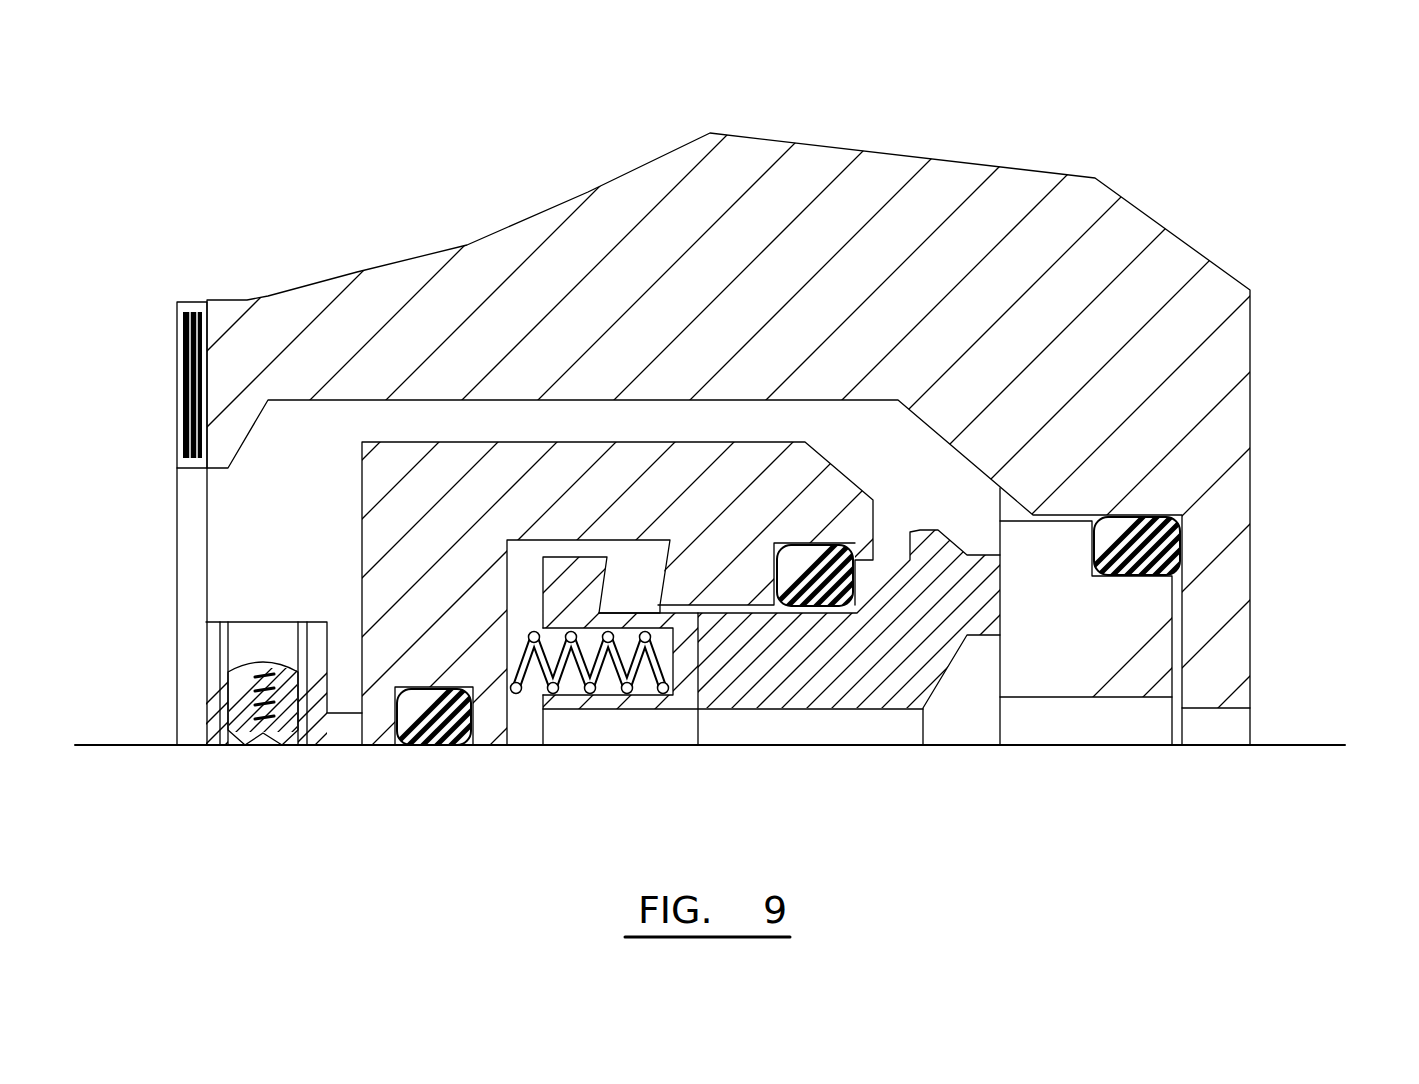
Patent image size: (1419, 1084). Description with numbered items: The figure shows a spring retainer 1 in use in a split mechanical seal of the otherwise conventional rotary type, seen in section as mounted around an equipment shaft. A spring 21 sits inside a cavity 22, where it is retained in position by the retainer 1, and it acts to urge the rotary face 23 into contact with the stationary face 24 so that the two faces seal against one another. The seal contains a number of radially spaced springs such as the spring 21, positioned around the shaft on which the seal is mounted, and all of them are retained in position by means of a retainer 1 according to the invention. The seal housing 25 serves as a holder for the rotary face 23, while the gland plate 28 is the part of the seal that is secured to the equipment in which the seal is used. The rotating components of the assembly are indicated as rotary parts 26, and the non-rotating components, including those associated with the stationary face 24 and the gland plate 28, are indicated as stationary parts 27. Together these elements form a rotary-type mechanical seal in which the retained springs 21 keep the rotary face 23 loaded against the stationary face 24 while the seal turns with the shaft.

The spring retainer 1 is at (556, 578).
The spring 21 is at (523, 653).
The cavity 22 is at (633, 573).
The rotary face 23 is at (858, 698).
The stationary face 24 is at (1145, 683).
The seal housing 25 is at (470, 462).
The rotary parts 26 is at (768, 700).
The stationary parts 27 is at (1167, 608).
The gland plate 28 is at (1123, 240).